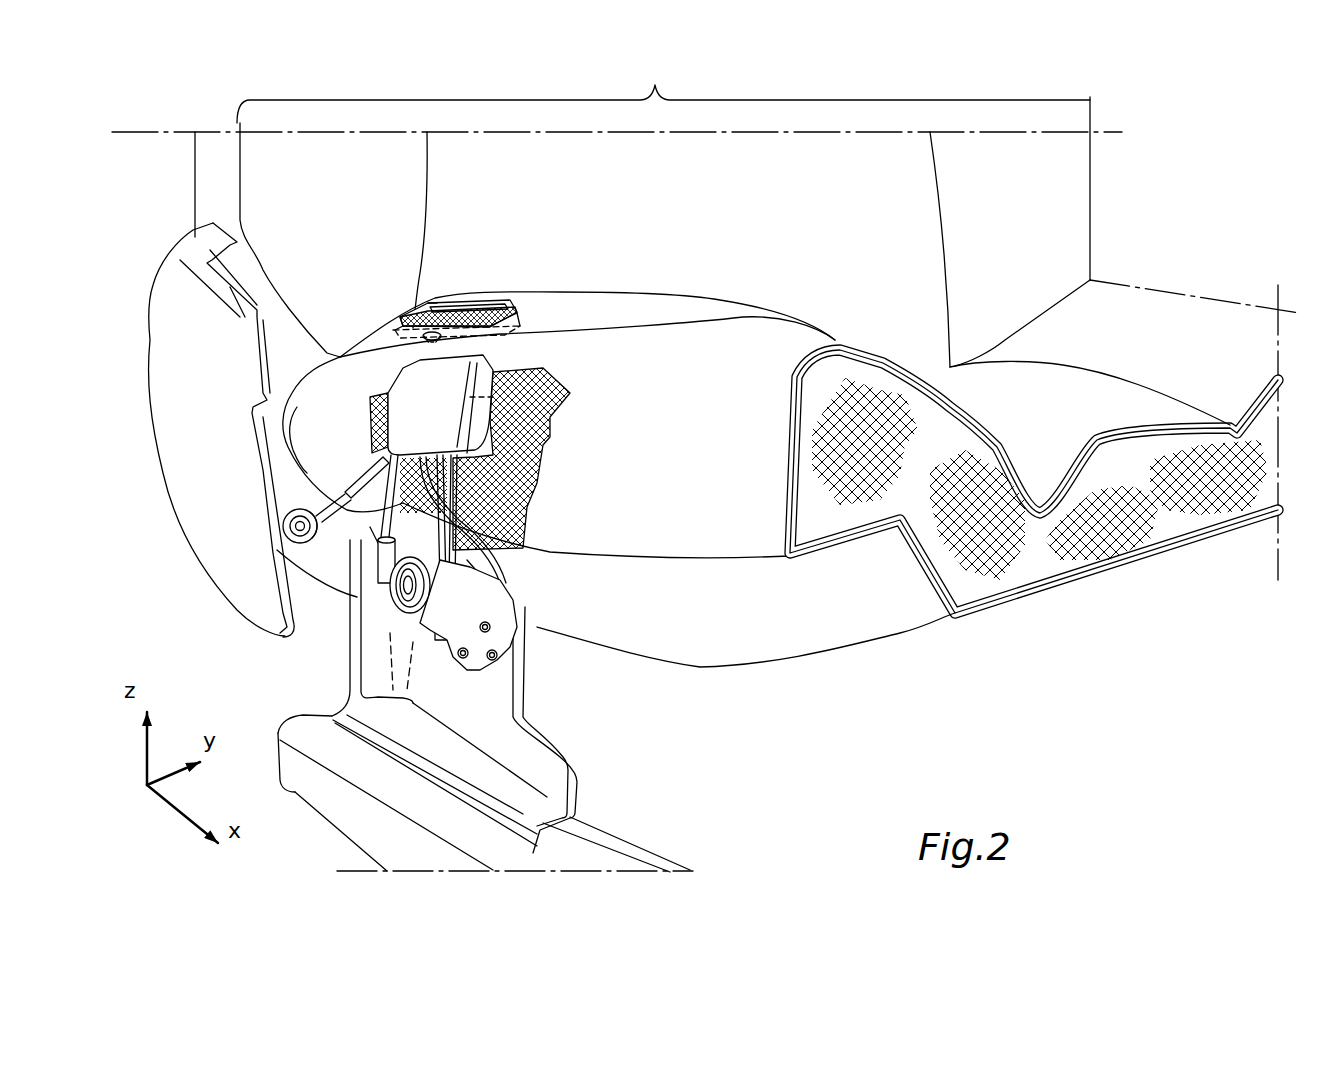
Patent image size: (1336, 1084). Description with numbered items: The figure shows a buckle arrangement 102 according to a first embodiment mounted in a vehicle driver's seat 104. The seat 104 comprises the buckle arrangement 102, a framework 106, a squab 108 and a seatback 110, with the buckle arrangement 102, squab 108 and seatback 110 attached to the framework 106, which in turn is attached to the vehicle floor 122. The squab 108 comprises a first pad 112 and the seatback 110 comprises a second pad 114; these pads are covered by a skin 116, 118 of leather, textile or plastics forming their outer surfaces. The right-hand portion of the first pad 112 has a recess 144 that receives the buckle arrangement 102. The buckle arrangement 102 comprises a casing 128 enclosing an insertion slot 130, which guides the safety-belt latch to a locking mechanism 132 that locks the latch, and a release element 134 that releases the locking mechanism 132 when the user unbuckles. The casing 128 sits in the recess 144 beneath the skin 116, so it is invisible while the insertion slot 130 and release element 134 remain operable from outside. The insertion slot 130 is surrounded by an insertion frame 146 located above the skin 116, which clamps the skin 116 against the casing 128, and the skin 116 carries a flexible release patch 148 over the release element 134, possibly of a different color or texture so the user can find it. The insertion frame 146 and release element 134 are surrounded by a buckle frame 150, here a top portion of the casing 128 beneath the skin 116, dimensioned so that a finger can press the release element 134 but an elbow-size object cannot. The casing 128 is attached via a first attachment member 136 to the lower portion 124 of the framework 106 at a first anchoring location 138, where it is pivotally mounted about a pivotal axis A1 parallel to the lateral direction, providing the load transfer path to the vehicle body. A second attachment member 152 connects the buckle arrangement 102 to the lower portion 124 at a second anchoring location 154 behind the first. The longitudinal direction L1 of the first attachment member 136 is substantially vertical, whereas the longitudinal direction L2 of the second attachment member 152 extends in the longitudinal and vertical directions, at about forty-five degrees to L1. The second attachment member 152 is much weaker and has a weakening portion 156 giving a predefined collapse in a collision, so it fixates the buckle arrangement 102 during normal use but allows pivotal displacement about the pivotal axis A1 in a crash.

The buckle arrangement 102 is at (343, 388).
The seat 104 is at (1010, 650).
The framework 106 is at (208, 202).
The squab 108 is at (1062, 422).
The seatback 110 is at (1040, 223).
The first pad 112 is at (1165, 508).
The second pad 114 is at (663, 89).
The skin 116 is at (680, 451).
The skin 118 is at (664, 229).
The vehicle floor 122 is at (811, 764).
The lower portion of the framework 124 is at (312, 625).
The casing 128 is at (420, 408).
The insertion slot 130 is at (475, 303).
The locking mechanism 132 is at (492, 390).
The release element 134 is at (427, 325).
The first attachment member 136 is at (480, 550).
The first anchoring location 138 is at (405, 600).
The recess 144 is at (493, 430).
The insertion frame 146 is at (436, 298).
The release patch 148 is at (410, 313).
The buckle frame 150 is at (518, 306).
The second attachment member 152 is at (322, 492).
The second anchoring location 154 is at (293, 537).
The weakening portion 156 is at (330, 500).
The longitudinal direction of the first attachment member L1 is at (418, 500).
The longitudinal direction of the second attachment member L2 is at (378, 468).
The pivotal axis A1 is at (408, 594).